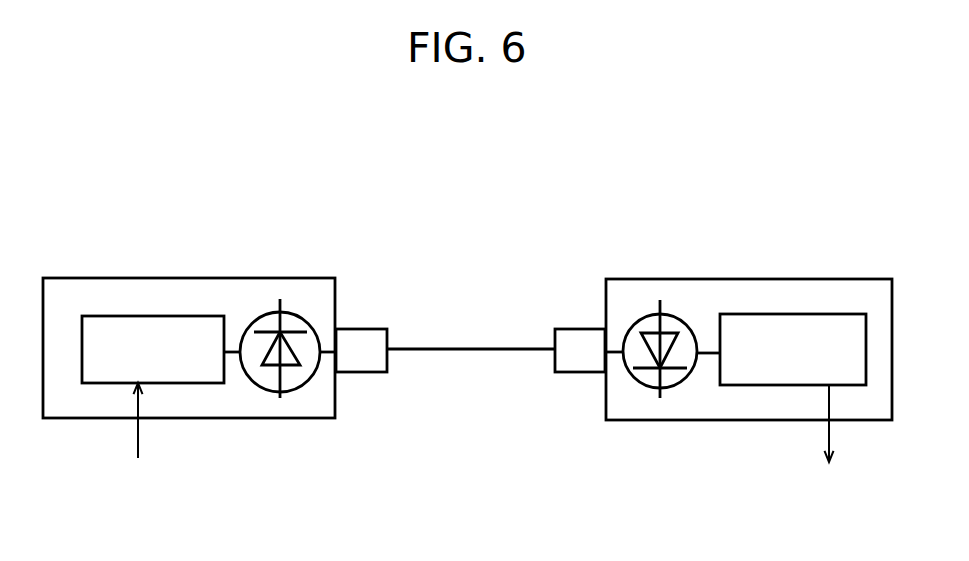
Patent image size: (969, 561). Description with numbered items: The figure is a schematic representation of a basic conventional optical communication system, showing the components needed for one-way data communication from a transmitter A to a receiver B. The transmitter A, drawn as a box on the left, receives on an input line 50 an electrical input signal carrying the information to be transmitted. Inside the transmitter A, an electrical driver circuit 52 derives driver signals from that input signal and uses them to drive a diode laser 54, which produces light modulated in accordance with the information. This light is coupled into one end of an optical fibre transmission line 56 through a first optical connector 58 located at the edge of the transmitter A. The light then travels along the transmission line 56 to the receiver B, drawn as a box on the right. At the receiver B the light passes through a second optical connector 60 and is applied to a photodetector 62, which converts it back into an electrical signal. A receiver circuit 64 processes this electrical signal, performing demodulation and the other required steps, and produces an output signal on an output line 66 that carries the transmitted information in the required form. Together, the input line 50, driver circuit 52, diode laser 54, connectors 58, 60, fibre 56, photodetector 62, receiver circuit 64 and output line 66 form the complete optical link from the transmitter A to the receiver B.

The transmitter A is at (122, 270).
The receiver B is at (715, 270).
The input line 50 is at (138, 437).
The electrical driver circuit 52 is at (205, 385).
The diode laser 54 is at (307, 318).
The optical fibre transmission line 56 is at (462, 350).
The first optical connector 58 is at (352, 327).
The second optical connector 60 is at (585, 327).
The photodetector 62 is at (690, 378).
The receiver circuit 64 is at (817, 314).
The output line 66 is at (822, 430).